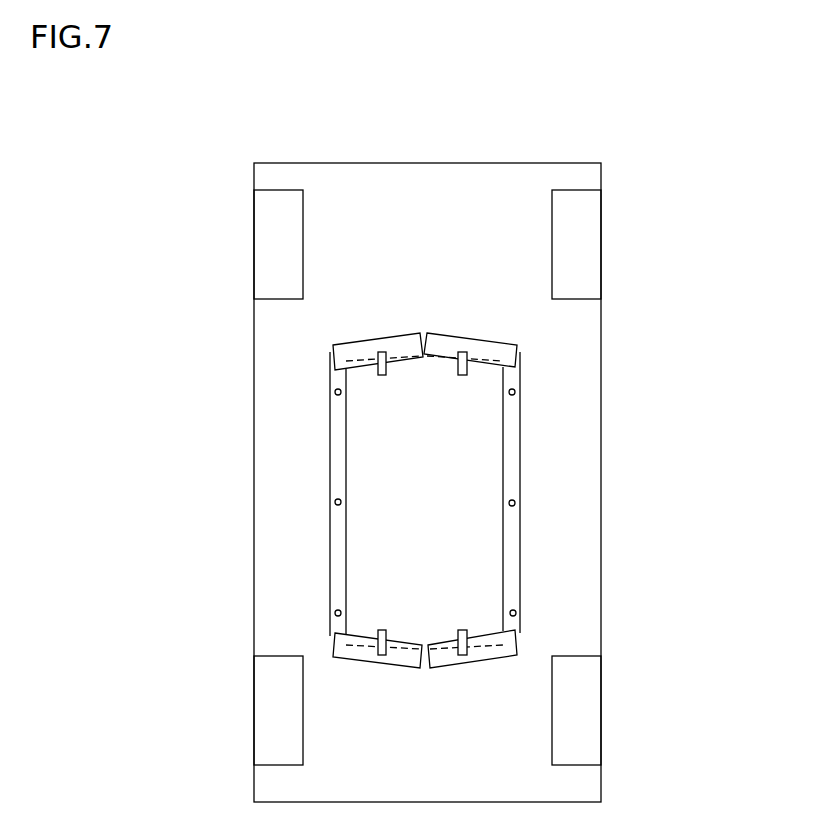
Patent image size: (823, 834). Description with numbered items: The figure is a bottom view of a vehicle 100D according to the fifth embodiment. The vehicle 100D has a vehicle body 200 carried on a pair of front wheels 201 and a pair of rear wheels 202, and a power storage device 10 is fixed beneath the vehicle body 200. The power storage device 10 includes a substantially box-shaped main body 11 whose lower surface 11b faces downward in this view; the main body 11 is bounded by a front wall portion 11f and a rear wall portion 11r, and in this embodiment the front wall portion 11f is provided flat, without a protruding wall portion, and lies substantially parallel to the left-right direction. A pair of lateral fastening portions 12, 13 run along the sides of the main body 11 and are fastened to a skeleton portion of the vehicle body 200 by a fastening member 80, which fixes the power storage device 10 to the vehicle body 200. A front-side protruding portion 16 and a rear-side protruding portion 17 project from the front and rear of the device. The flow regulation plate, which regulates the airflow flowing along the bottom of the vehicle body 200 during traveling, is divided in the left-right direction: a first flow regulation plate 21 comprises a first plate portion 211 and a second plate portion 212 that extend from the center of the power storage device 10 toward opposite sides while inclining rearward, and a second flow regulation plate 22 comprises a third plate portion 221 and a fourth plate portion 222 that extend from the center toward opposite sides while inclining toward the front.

The vehicle 100D is at (702, 138).
The vehicle body 200 is at (602, 405).
The front wheels 201 is at (266, 255).
The rear wheels 202 is at (266, 718).
The power storage device 10 is at (524, 548).
The main body 11 is at (503, 352).
The lower surface 11b is at (385, 517).
The front wall portion 11f is at (367, 342).
The rear wall portion 11r is at (490, 662).
The lateral fastening portion 12 is at (330, 472).
The lateral fastening portion 13 is at (521, 470).
The front-side protruding portion 16 is at (465, 352).
The rear-side protruding portion 17 is at (383, 655).
The first flow regulation plate 21 is at (426, 319).
The first plate portion 211 is at (395, 338).
The second plate portion 212 is at (453, 340).
The second flow regulation plate 22 is at (426, 686).
The third plate portion 221 is at (398, 662).
The fourth plate portion 222 is at (467, 662).
The fastening member 80 is at (518, 392).